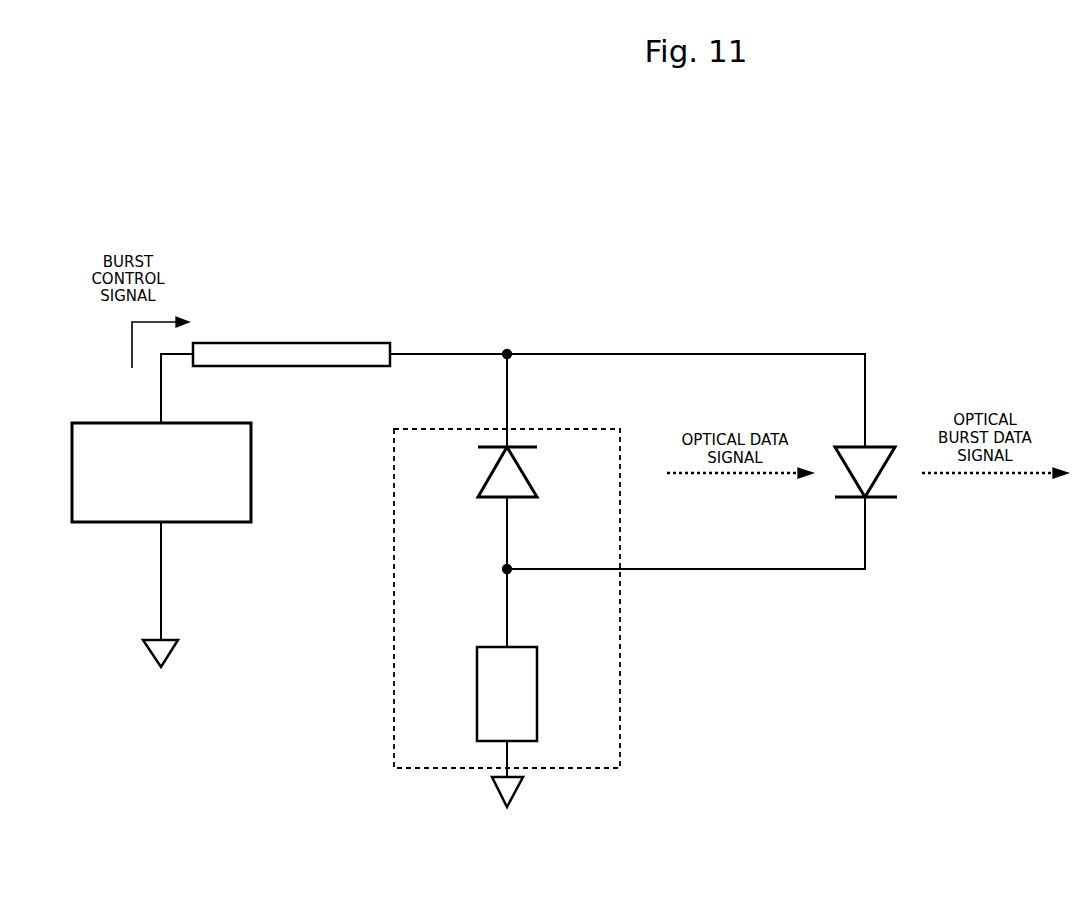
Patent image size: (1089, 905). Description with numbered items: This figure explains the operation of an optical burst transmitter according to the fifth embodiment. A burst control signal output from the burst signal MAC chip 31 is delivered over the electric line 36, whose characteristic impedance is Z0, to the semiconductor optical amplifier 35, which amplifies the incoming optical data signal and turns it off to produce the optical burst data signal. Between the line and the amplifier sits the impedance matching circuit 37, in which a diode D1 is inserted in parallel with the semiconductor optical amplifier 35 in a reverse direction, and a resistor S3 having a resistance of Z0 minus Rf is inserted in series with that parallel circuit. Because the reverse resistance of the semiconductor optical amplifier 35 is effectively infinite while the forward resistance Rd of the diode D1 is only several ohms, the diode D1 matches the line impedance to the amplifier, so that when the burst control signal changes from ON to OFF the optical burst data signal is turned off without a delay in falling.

The MAC chip for burst signals 31 is at (211, 423).
The semiconductor optical amplifier 35 is at (880, 447).
The electric line 36 is at (350, 343).
The impedance matching circuit 37 is at (394, 596).
The diode D1 is at (530, 484).
The resistor S3 is at (518, 647).